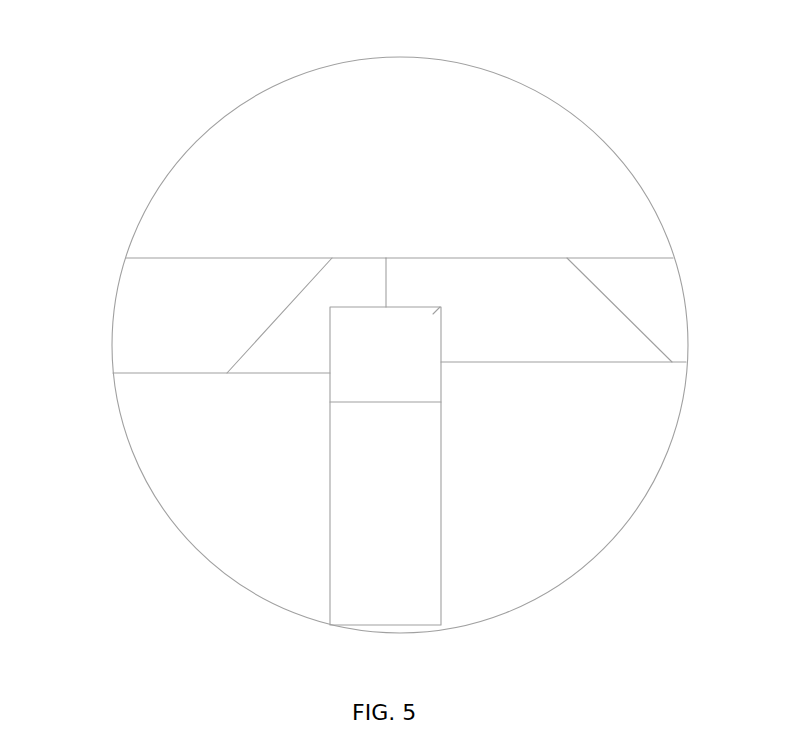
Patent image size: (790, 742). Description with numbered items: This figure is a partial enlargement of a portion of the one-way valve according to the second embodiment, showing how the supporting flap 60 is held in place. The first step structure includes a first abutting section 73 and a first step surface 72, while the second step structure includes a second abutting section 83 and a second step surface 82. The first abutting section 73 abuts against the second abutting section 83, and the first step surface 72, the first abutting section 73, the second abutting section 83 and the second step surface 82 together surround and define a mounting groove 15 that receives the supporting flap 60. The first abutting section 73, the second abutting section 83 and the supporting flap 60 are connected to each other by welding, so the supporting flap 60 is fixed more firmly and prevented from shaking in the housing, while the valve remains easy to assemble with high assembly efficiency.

The mounting groove 15 is at (338, 314).
The supporting flap 60 is at (422, 332).
The first step surface 72 is at (330, 350).
The first abutting section 73 is at (359, 275).
The second step surface 82 is at (441, 346).
The second abutting section 83 is at (399, 272).